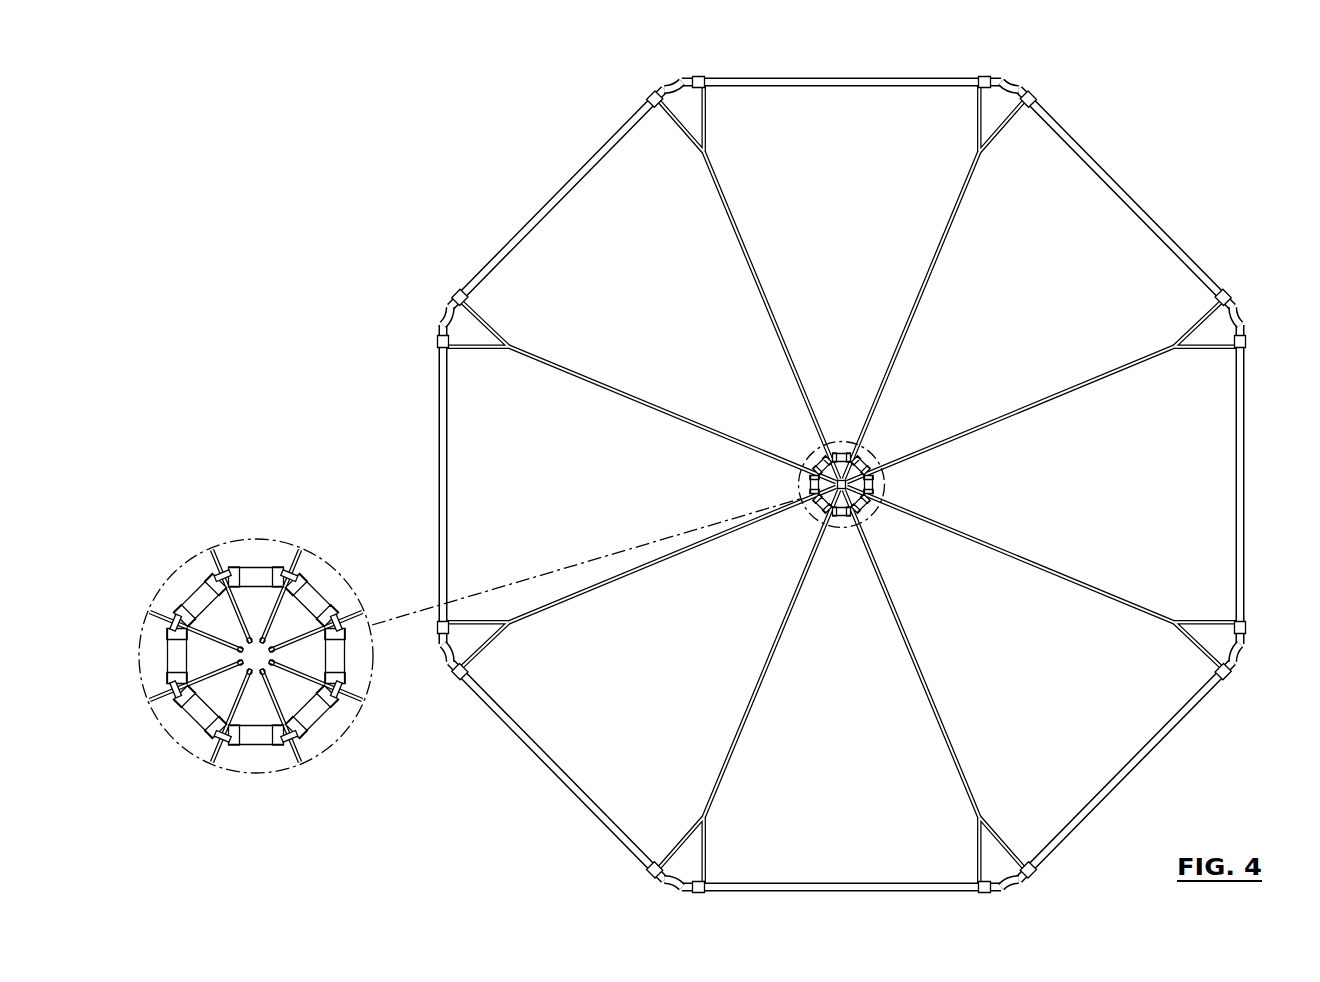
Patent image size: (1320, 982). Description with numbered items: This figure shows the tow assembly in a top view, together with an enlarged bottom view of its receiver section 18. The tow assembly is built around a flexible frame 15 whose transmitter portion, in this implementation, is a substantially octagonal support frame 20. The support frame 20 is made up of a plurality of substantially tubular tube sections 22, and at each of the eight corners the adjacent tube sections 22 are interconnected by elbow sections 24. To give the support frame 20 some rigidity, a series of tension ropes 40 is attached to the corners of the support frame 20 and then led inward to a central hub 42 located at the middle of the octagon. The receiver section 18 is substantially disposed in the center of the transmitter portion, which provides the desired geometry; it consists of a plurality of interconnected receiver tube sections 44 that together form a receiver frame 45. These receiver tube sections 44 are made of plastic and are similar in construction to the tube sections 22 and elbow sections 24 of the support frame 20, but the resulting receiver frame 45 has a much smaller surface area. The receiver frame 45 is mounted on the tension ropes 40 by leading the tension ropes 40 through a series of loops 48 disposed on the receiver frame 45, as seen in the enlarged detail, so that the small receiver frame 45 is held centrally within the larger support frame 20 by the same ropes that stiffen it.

The flexible frame 15 is at (598, 746).
The receiver section 18 is at (862, 505).
The support frame 20 is at (1248, 517).
The tube sections 22 is at (862, 84).
The elbow sections 24 is at (660, 90).
The tension ropes 40 is at (624, 392).
The central hub 42 is at (865, 458).
The receiver tube sections 44 is at (195, 598).
The receiver frame 45 is at (259, 556).
The loops 48 is at (337, 697).